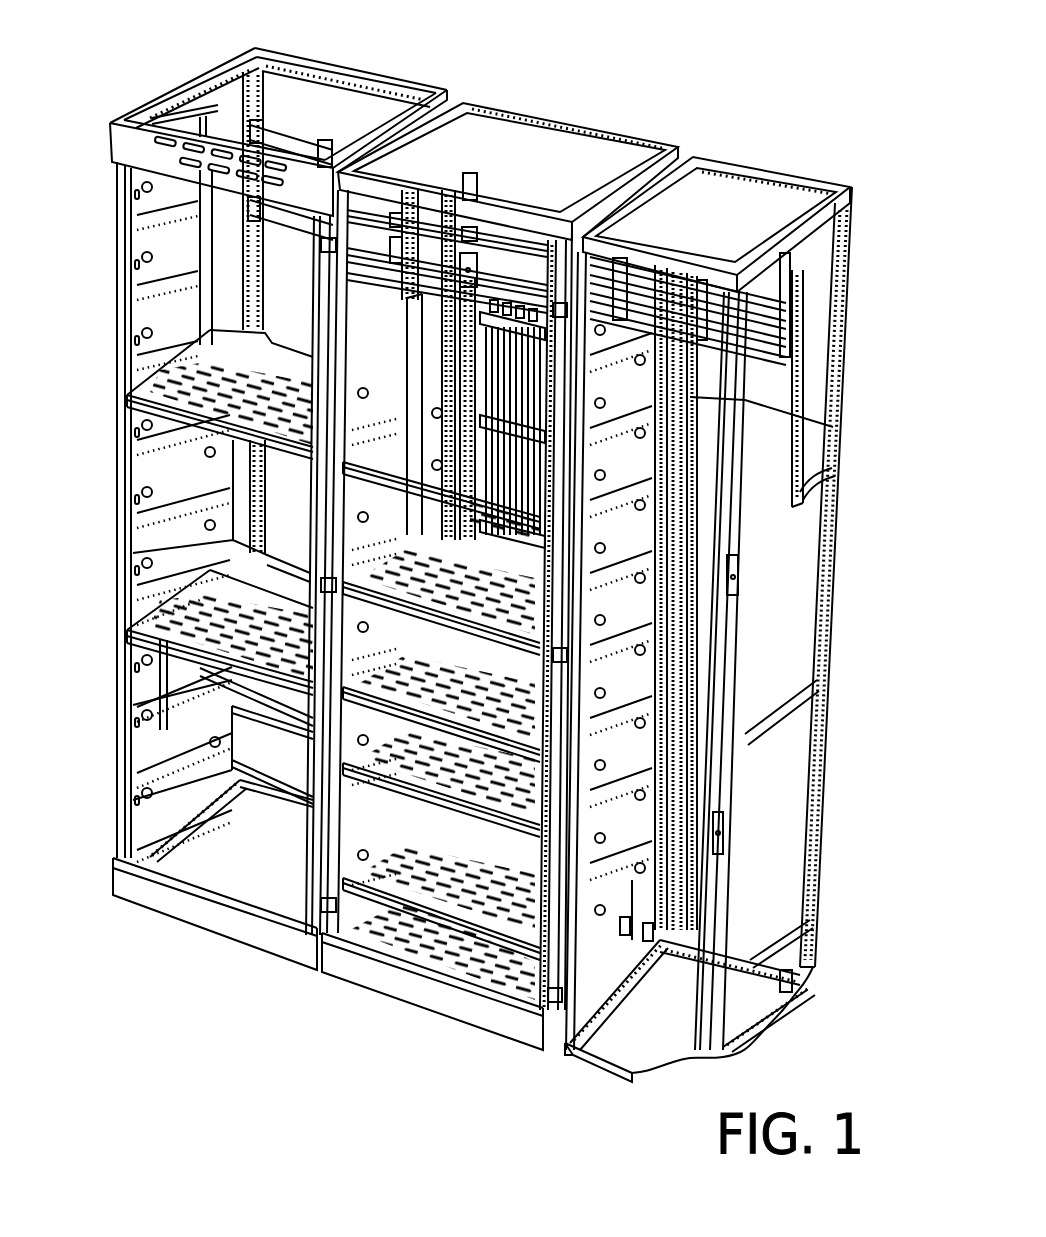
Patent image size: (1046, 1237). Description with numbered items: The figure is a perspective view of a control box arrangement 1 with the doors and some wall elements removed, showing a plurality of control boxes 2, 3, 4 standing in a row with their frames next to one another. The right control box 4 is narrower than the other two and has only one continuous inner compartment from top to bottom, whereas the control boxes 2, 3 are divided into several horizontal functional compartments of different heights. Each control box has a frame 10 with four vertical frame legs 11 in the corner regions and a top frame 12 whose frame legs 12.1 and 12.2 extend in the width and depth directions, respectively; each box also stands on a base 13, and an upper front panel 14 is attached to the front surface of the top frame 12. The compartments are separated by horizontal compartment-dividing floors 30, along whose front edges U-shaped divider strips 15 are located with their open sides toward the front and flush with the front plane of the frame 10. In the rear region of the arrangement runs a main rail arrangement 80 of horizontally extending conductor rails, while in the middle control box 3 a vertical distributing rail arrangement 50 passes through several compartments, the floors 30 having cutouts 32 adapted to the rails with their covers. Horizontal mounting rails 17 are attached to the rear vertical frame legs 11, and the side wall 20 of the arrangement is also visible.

The control box arrangement 1 is at (248, 987).
The control box 2 is at (215, 935).
The middle control box 3 is at (410, 1007).
The right control box 4 is at (592, 1072).
The frame 10 is at (108, 320).
The vertical frame leg 11 is at (125, 480).
The top frame 12 is at (398, 82).
The frame leg 12.1 is at (320, 75).
The frame leg 12.2 is at (212, 82).
The base 13 is at (157, 895).
The upper front panel 14 is at (122, 143).
The divider strip 15 is at (125, 405).
The mounting rail 17 is at (805, 455).
The perforated side wall 20 is at (150, 242).
The compartment-dividing floor 30 is at (160, 617).
The cutout 32 is at (477, 533).
The distributing rail arrangement 50 is at (408, 303).
The main rail arrangement 80 is at (518, 205).